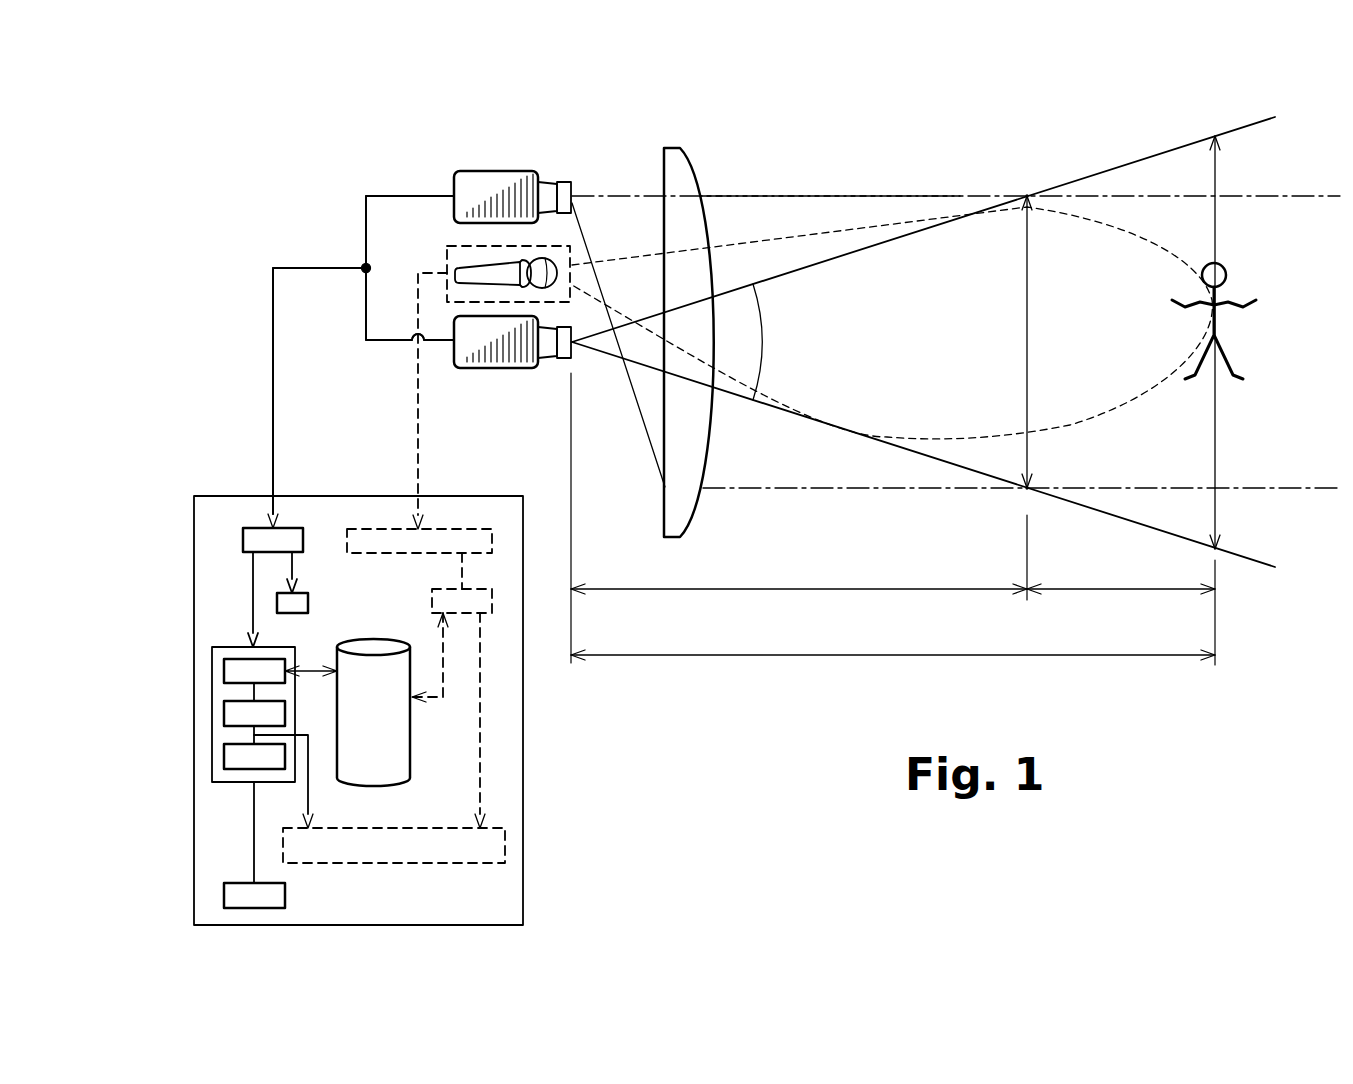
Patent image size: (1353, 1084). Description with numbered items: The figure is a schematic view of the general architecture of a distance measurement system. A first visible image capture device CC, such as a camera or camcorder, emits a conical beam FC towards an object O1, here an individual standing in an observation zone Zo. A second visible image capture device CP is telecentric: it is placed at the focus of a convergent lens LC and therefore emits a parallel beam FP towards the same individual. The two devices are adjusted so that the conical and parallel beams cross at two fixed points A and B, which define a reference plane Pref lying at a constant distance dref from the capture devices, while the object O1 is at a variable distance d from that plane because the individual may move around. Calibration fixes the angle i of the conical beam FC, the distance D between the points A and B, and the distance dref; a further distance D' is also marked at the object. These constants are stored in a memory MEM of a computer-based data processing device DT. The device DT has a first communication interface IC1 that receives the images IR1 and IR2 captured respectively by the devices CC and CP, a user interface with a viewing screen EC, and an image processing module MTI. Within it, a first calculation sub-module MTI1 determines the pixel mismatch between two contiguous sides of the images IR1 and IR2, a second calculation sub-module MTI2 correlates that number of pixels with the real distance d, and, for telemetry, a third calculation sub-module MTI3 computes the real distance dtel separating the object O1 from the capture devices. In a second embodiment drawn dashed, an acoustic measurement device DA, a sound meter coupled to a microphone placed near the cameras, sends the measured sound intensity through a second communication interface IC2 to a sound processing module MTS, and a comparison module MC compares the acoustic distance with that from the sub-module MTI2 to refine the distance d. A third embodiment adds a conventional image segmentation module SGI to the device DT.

The second visible image capture device CP is at (494, 158).
The first visible image capture device CC is at (476, 347).
The acoustic measurement device DA is at (455, 240).
The convergent lens LC is at (674, 162).
The parallel beam FP is at (825, 196).
The observation zone Zo is at (1074, 190).
The conical beam FC is at (1153, 157).
The object O1 is at (1242, 279).
The image IR1 is at (303, 268).
The image IR2 is at (353, 349).
The data processing device DT is at (194, 550).
The first communication interface IC1 is at (257, 538).
The second communication interface IC2 is at (377, 527).
The viewing screen EC is at (308, 598).
The sound processing module MTS is at (432, 602).
The image processing module MTI is at (218, 792).
The first calculation sub-module MTI1 is at (230, 676).
The second calculation sub-module MTI2 is at (230, 718).
The third calculation sub-module MTI3 is at (230, 757).
The image segmentation module SGI is at (228, 899).
The memory MEM is at (425, 752).
The comparison module MC is at (494, 864).
The reference plane Pref is at (1027, 398).
The distance between intersection points D is at (1017, 342).
The distance D' is at (1227, 342).
The fixed intersection point A is at (1025, 178).
The fixed intersection point B is at (1027, 502).
The angle of the conical beam i is at (763, 342).
The reference distance dref is at (799, 518).
The distance to the reference plane d is at (1121, 601).
The telemetry distance dtel is at (893, 625).